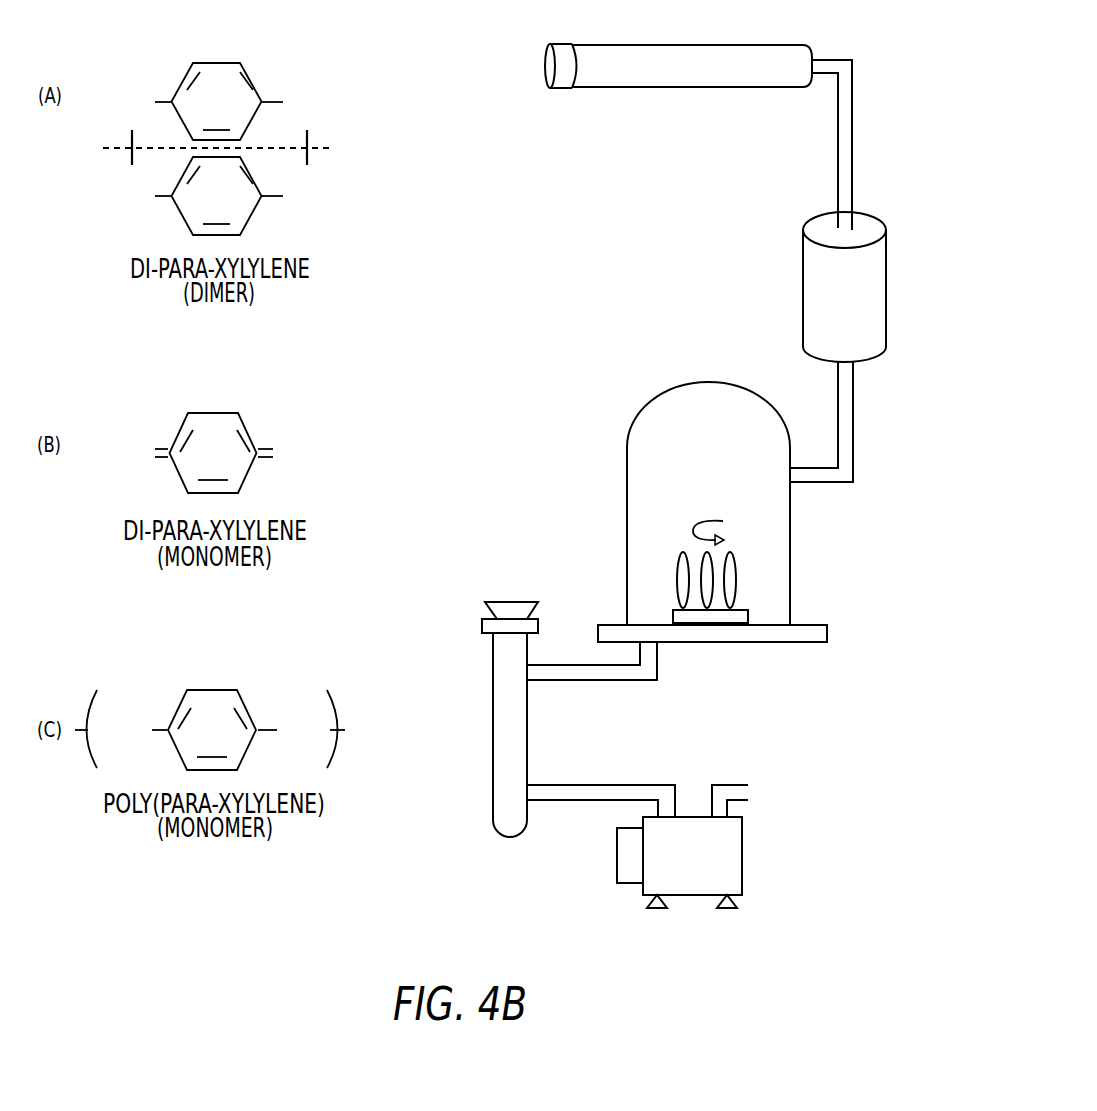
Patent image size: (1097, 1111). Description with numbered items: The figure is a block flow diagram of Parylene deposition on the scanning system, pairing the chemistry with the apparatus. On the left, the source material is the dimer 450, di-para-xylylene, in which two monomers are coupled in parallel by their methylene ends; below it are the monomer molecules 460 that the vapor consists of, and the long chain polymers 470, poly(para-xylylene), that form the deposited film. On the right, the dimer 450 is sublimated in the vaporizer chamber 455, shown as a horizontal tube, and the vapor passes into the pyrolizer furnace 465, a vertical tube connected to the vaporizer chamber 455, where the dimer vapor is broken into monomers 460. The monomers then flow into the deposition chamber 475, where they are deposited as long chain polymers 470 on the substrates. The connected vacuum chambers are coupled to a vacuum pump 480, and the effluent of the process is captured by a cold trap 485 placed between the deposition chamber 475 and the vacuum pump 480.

The dimer 450 is at (325, 90).
The vaporizer chamber 455 is at (677, 45).
The monomer molecules 460 is at (277, 430).
The pyrolizer furnace 465 is at (803, 324).
The long chain polymers 470 is at (250, 678).
The deposition chamber 475 is at (790, 540).
The vacuum pump 480 is at (617, 867).
The cold trap 485 is at (493, 752).